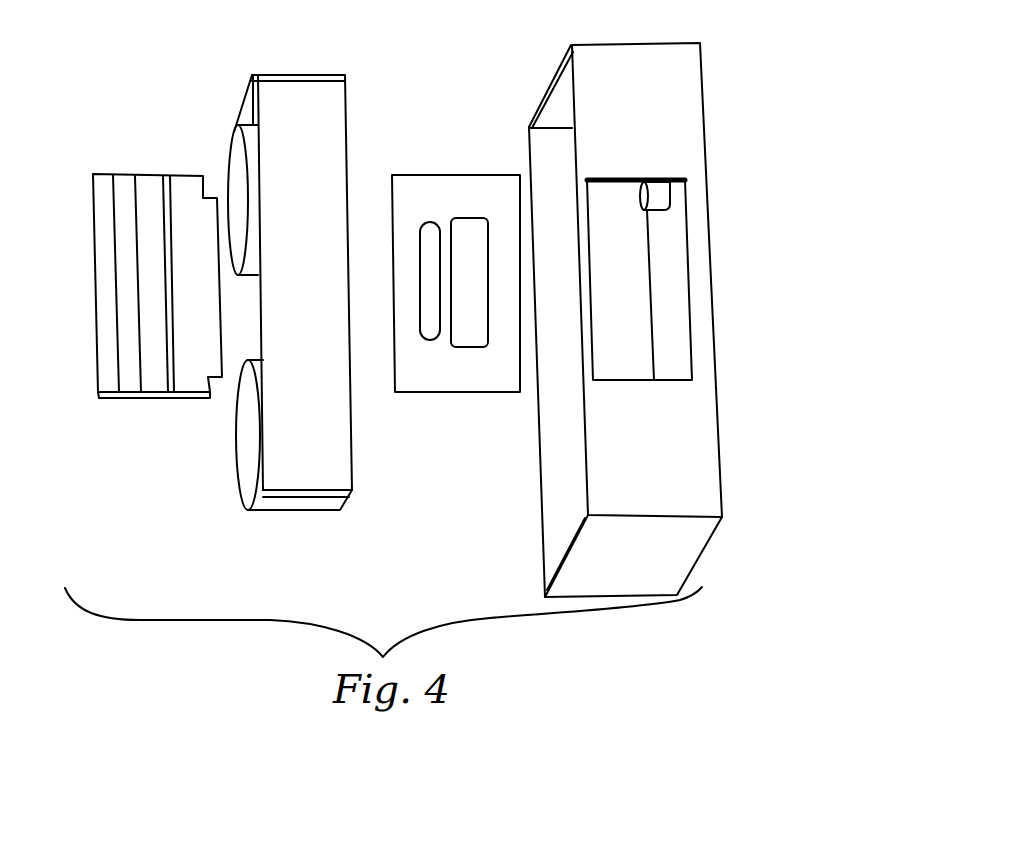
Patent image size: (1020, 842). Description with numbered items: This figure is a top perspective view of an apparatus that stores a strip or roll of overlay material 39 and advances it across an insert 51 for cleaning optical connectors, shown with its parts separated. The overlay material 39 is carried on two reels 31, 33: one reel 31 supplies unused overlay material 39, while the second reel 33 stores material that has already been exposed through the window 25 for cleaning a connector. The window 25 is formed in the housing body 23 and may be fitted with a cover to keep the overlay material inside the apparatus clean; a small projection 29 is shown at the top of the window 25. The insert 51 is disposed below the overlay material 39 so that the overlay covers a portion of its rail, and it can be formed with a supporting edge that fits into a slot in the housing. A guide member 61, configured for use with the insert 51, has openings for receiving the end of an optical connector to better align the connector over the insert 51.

The housing 23 is at (654, 320).
The window 25 is at (638, 303).
The cylindrical projection 29 is at (665, 193).
The reel 31 is at (236, 152).
The second reel 33 is at (243, 446).
The overlay material 39 is at (257, 292).
The insert 51 is at (121, 400).
The guide member 61 is at (450, 393).